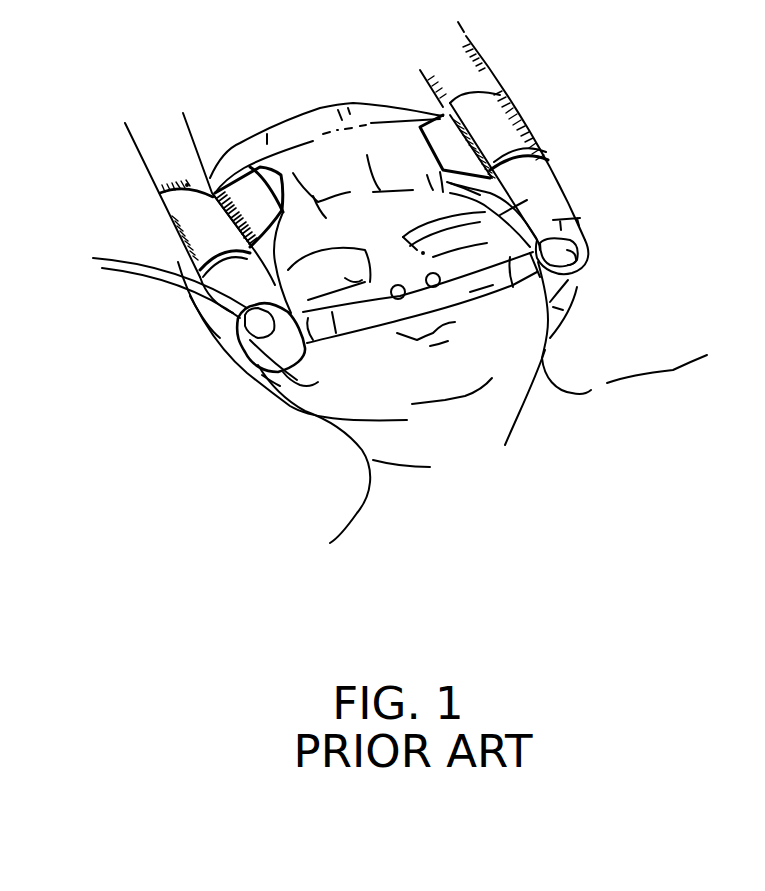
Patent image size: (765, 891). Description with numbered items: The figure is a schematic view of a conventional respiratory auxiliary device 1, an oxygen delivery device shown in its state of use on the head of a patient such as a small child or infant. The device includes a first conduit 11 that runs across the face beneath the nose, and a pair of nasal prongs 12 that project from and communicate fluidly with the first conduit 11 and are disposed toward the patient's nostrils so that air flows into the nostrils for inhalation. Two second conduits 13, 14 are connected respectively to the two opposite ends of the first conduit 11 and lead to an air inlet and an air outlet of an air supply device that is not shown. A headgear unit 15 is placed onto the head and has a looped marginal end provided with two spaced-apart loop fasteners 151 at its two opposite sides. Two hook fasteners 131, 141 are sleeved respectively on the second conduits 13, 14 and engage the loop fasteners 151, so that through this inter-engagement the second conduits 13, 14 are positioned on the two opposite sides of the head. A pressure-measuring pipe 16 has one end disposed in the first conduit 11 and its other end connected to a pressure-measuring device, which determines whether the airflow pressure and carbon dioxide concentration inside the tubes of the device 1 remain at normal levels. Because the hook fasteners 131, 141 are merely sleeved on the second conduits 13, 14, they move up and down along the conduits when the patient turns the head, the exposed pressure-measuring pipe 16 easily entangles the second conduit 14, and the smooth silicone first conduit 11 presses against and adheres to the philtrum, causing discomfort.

The conventional respiratory auxiliary device 1 is at (583, 183).
The first conduit 11 is at (359, 320).
The nasal prongs 12 is at (402, 298).
The second conduit 13 is at (482, 67).
The hook fastener 131 is at (492, 127).
The second conduit 14 is at (143, 147).
The hook fastener 141 is at (185, 222).
The headgear unit 15 is at (315, 145).
The loop fasteners 151 is at (250, 185).
The pressure-measuring pipe 16 is at (152, 272).